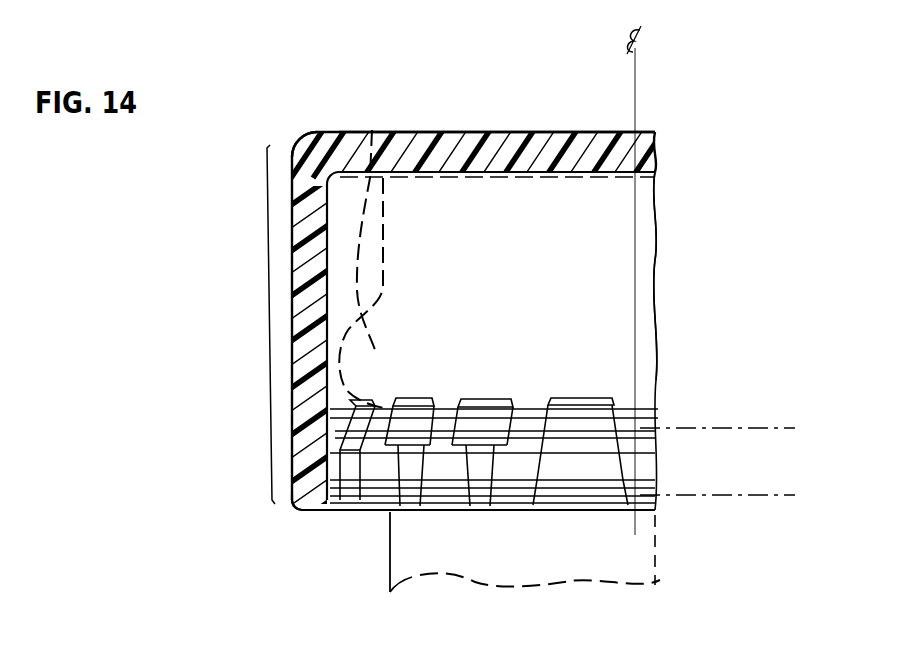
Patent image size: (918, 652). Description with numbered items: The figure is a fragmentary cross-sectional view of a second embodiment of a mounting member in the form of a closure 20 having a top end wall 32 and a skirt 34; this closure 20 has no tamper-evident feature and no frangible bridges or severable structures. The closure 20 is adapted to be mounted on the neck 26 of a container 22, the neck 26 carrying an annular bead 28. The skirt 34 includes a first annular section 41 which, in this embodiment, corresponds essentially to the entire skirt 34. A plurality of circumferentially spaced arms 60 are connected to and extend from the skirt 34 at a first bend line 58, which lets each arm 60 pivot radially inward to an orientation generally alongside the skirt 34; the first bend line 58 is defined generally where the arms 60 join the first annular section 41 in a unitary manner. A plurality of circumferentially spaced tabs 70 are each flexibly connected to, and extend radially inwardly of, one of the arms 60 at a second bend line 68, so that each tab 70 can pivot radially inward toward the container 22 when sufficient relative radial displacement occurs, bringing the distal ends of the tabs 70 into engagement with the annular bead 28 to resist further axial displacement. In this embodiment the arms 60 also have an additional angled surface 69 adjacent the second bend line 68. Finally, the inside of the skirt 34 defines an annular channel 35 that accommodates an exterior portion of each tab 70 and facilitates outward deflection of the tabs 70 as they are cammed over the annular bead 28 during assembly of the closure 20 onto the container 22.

The closure 20 is at (509, 129).
The container 22 is at (655, 283).
The neck 26 is at (640, 218).
The annular bead 28 is at (372, 130).
The top end wall 32 is at (664, 131).
The skirt 34 is at (300, 150).
The annular channel 35 is at (300, 511).
The first annular section 41 is at (269, 318).
The first bend line 58 is at (770, 495).
The arm 60 is at (567, 493).
The second bend line 68 is at (585, 409).
The angled surface 69 is at (518, 430).
The tab 70 is at (423, 396).